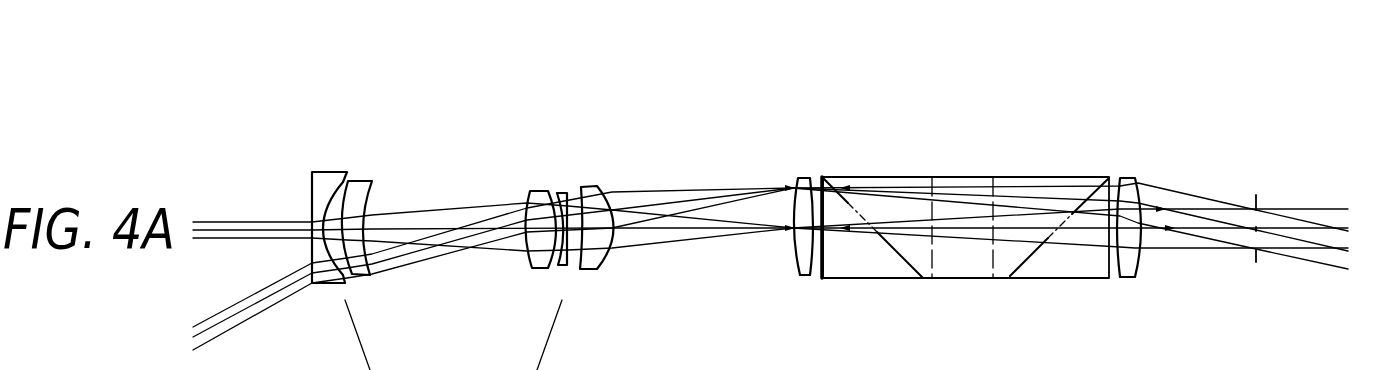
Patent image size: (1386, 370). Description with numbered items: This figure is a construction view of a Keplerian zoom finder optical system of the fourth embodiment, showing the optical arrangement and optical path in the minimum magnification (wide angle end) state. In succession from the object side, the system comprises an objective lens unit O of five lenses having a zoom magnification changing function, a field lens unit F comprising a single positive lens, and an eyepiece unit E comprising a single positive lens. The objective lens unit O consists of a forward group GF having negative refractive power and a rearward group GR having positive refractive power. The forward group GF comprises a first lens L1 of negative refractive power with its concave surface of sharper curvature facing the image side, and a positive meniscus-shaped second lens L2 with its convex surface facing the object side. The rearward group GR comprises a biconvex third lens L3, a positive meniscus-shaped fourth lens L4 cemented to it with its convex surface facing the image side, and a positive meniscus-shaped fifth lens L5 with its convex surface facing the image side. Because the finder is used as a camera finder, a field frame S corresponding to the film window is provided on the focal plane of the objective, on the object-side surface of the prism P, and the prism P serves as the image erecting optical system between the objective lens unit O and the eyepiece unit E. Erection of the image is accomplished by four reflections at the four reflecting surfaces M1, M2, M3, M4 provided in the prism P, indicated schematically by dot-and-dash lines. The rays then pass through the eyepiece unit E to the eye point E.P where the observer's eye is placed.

The objective lens unit O is at (592, 73).
The forward group GF is at (377, 115).
The rearward group GR is at (622, 115).
The first lens L1 is at (324, 172).
The second lens L2 is at (368, 180).
The third lens L3 is at (538, 190).
The fourth lens L4 is at (558, 192).
The fifth lens L5 is at (586, 187).
The field lens unit F is at (778, 153).
The field frame S is at (820, 278).
The prism P is at (1108, 153).
The first reflecting surface M1 is at (907, 258).
The second reflecting surface M2 is at (932, 267).
The third reflecting surface M3 is at (992, 265).
The fourth reflecting surface M4 is at (1030, 258).
The eyepiece unit E is at (1113, 153).
The eye point E.P is at (1257, 220).